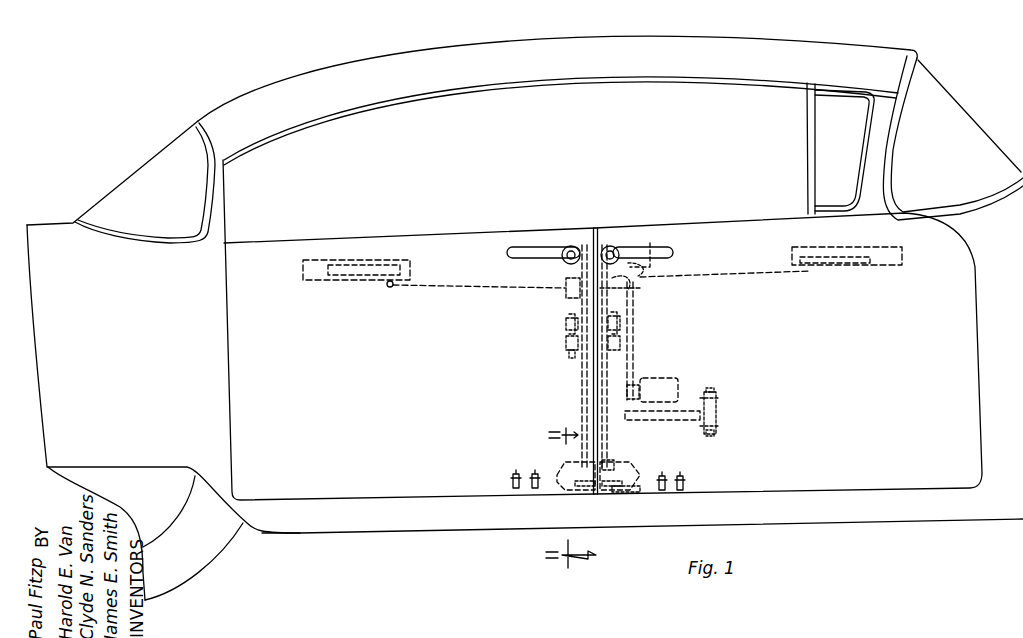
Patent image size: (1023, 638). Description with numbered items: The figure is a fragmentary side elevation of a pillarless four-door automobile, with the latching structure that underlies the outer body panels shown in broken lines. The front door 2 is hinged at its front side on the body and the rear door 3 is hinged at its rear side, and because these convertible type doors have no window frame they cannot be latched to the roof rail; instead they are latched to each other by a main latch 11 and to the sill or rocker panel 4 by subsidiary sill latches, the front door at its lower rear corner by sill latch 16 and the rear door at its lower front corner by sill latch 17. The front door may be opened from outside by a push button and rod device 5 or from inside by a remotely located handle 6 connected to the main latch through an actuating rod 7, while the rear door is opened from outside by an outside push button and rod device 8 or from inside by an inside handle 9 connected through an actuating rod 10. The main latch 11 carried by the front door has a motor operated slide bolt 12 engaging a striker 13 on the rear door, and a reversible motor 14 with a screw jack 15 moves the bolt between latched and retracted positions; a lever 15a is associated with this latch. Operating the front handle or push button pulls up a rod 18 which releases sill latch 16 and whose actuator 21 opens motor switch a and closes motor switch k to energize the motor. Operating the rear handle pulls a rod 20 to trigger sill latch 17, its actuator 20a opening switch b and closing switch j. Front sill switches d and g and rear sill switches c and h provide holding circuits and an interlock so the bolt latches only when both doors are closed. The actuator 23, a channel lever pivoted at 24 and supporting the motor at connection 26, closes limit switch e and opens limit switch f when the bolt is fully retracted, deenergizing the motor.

The front door 2 is at (727, 229).
The rear door 3 is at (447, 240).
The sill or rocker panel 4 is at (410, 526).
The push button and rod device 5 is at (615, 253).
The remotely located handle 6 is at (834, 263).
The actuating rod 7 is at (750, 272).
The outside push button and rod device 8 is at (570, 249).
The inside handle 9 is at (355, 281).
The actuating rod 10 is at (433, 290).
The main latch 11 is at (656, 264).
The slide bolt 12 is at (547, 497).
The striker 13 is at (575, 293).
The reversible motor 14 is at (683, 374).
The screw jack 15 is at (645, 366).
The lock lever 15a is at (645, 297).
The subsidiary sill latch 16 is at (680, 478).
The subsidiary sill latch 17 is at (564, 468).
The rod 18 is at (615, 357).
The rod 20 is at (580, 380).
The actuator 20a is at (565, 343).
The actuator 21 is at (640, 338).
The actuator 23 is at (700, 420).
The pivot 24 is at (643, 472).
The connection 26 is at (618, 453).
The motor switch a is at (625, 320).
The motor switch b is at (560, 322).
The sill switch c is at (527, 492).
The sill switch d is at (690, 482).
The motor limit switch e is at (722, 426).
The motor limit switch f is at (723, 392).
The sill switch g is at (640, 491).
The sill switch h is at (510, 478).
The motor switch j is at (560, 353).
The motor switch k is at (629, 346).